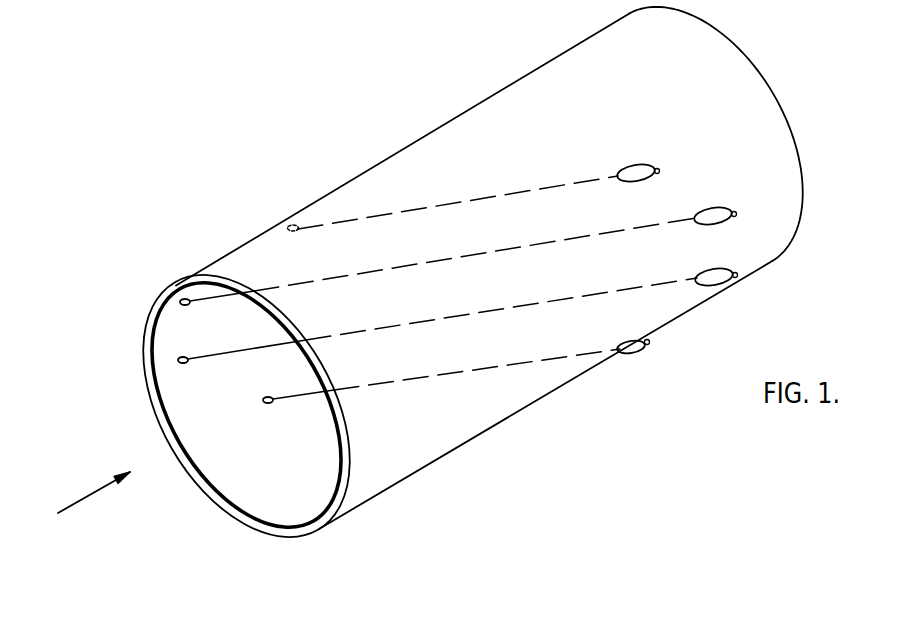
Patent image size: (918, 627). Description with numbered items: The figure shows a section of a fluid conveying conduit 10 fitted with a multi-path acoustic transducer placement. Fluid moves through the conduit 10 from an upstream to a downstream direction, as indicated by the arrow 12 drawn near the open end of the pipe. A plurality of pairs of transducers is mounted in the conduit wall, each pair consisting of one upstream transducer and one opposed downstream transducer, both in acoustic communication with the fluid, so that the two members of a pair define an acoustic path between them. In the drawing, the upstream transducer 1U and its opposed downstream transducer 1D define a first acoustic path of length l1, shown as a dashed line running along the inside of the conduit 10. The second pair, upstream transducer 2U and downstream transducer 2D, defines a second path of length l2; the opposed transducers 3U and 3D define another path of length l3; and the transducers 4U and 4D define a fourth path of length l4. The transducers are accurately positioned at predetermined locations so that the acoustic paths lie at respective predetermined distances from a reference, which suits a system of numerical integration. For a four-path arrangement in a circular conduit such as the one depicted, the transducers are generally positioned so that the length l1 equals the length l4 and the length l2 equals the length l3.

The conduit 10 is at (537, 72).
The arrow 12 is at (98, 490).
The upstream transducer 1U is at (283, 225).
The upstream transducer 2U is at (183, 304).
The upstream transducer 3U is at (182, 362).
The upstream transducer 4U is at (268, 402).
The downstream transducer 1D is at (640, 165).
The downstream transducer 2D is at (710, 209).
The downstream transducer 3D is at (730, 283).
The downstream transducer 4D is at (645, 346).
The acoustic path length l1 is at (394, 210).
The acoustic path length l2 is at (452, 256).
The acoustic path length l3 is at (504, 310).
The acoustic path length l4 is at (540, 358).